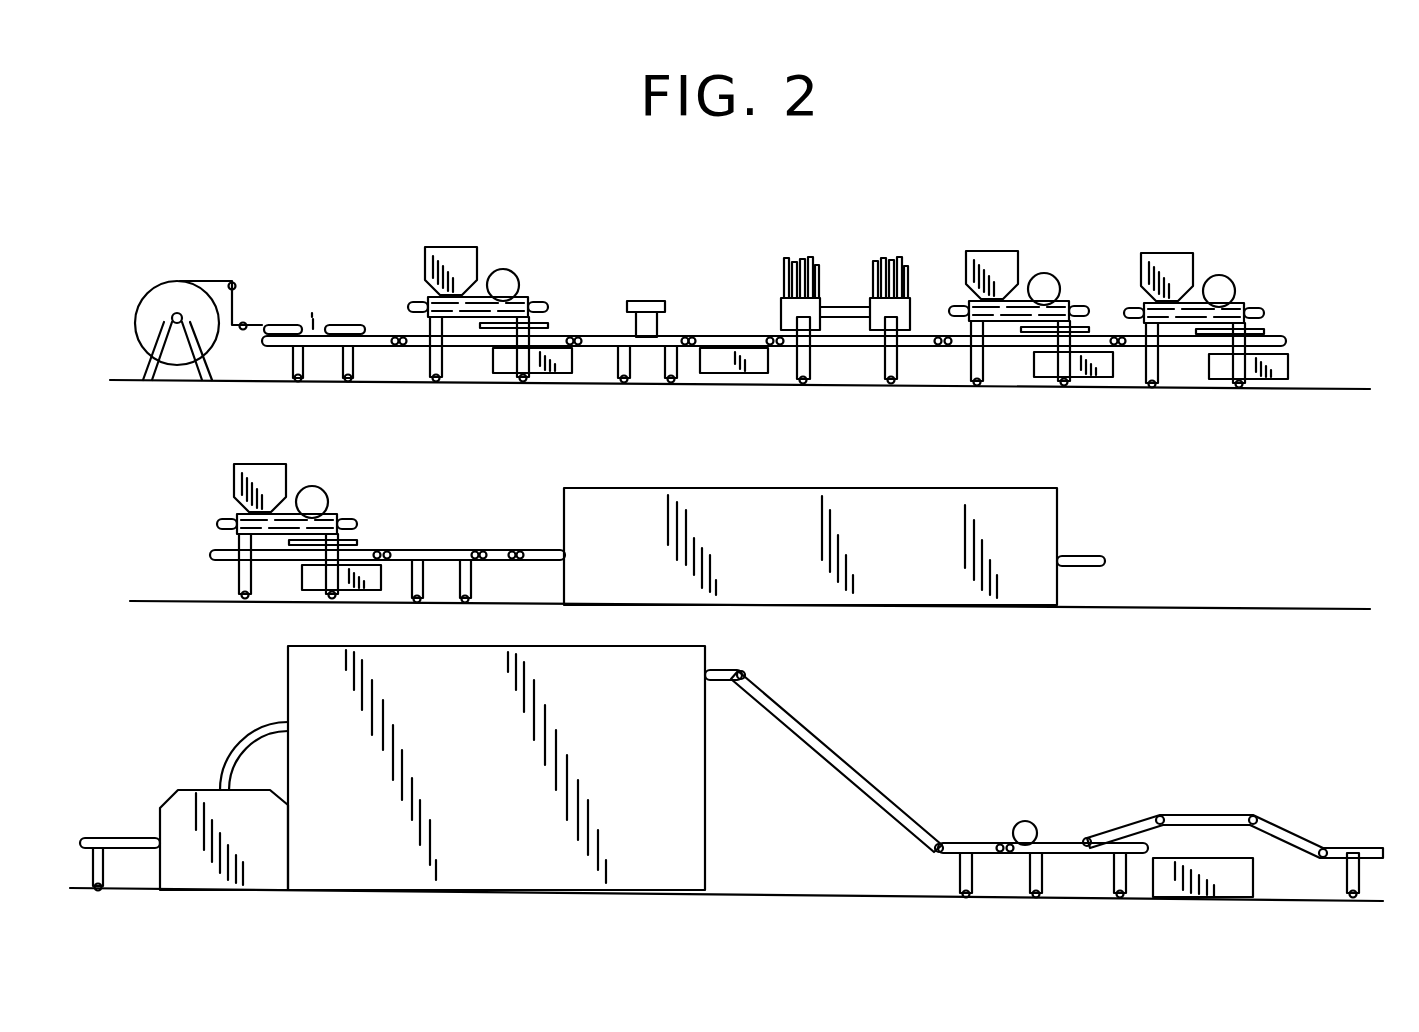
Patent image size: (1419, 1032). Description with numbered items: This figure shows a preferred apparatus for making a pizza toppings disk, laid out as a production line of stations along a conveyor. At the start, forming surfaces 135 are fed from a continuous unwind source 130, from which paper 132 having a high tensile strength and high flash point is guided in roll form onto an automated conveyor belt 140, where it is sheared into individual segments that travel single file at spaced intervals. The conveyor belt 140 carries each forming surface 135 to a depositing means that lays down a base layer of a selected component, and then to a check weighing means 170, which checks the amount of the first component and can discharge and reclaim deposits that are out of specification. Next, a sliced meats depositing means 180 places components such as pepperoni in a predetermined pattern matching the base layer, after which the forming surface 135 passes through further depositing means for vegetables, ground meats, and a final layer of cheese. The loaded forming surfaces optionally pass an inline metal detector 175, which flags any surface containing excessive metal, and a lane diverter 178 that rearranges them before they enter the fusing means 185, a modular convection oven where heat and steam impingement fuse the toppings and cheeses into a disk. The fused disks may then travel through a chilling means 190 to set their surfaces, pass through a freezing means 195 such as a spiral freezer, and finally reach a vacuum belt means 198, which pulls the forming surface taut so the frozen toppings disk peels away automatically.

The continuous unwind source 130 is at (160, 318).
The paper 132 is at (232, 283).
The forming surfaces 135 is at (365, 330).
The conveyor belt 140 is at (272, 344).
The check weighing means 170 is at (648, 300).
The inline metal detector 175 is at (433, 550).
The lane diverter 178 is at (512, 550).
The sliced meats depositing means 180 is at (803, 258).
The fusing means 185 is at (728, 489).
The chilling means 190 is at (213, 785).
The freezing means 195 is at (712, 655).
The vacuum belt means 198 is at (1060, 840).